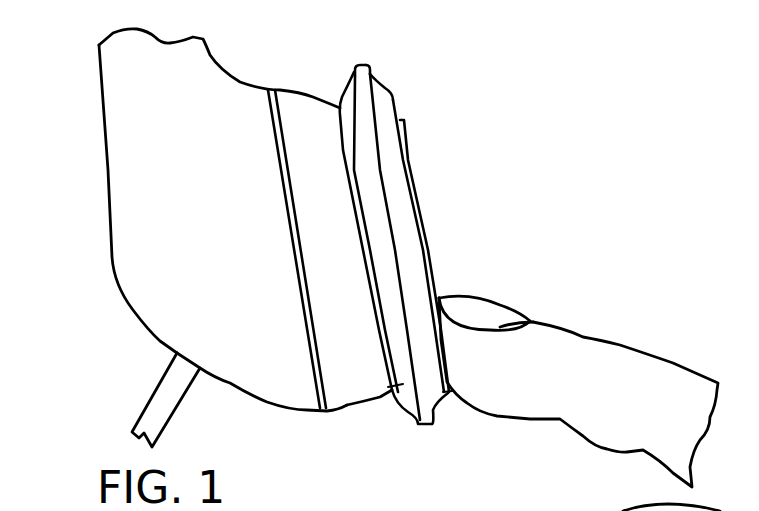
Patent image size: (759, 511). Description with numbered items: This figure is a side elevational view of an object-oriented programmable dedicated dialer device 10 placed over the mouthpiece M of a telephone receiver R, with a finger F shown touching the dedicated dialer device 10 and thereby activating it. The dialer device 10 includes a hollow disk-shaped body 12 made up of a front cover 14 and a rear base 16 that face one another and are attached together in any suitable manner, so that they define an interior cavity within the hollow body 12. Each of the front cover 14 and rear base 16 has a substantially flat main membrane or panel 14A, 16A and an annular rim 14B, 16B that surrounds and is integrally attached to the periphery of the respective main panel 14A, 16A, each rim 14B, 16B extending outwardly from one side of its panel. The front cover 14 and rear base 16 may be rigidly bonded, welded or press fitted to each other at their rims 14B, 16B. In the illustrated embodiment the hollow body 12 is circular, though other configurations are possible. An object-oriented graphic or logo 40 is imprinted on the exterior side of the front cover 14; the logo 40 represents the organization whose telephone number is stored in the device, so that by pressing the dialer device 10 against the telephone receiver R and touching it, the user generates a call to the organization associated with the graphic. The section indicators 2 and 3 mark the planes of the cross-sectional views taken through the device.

The dedicated dialer device 10 is at (474, 225).
The hollow disk-shaped body 12 is at (405, 96).
The front cover 14 is at (395, 107).
The main panel 14A is at (445, 381).
The annular rim 14B is at (380, 80).
The rear base 16 is at (358, 150).
The main panel 16A is at (388, 390).
The annular rim 16B is at (350, 72).
The graphic or logo 40 is at (423, 242).
The telephone receiver R is at (112, 223).
The mouthpiece M is at (343, 397).
The finger F is at (655, 357).
The section line 2- 2 is at (398, 53).
The section line 3- 3 is at (340, 59).